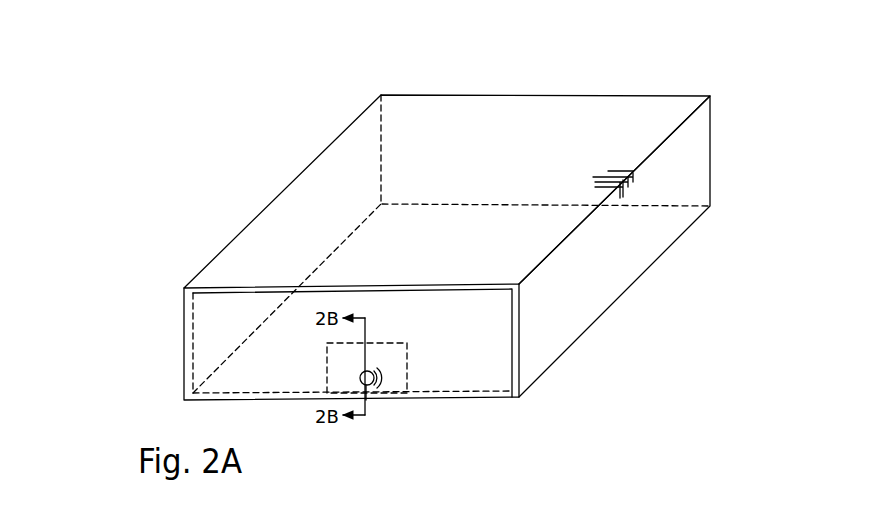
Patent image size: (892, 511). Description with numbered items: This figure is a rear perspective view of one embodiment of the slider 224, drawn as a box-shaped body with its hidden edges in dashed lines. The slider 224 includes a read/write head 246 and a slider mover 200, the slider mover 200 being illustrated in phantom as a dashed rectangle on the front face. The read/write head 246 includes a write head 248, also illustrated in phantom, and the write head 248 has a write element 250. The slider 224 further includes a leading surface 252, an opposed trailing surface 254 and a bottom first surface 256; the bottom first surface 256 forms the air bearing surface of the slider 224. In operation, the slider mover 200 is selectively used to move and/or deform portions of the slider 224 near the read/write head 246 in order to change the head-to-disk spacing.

The slider 224 is at (660, 279).
The leading surface 252 is at (566, 140).
The trailing surface 254 is at (221, 328).
The bottom first surface 256 is at (562, 310).
The slider mover 200 is at (397, 368).
The read/write head 246 is at (373, 403).
The write head 248 is at (381, 379).
The write element 250 is at (358, 371).